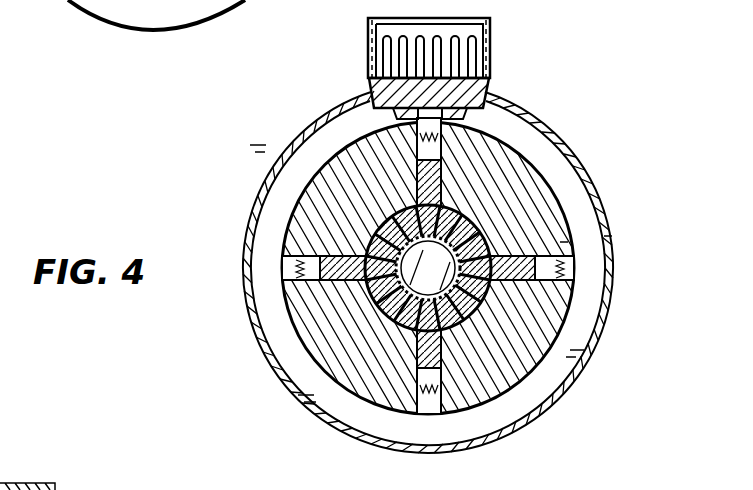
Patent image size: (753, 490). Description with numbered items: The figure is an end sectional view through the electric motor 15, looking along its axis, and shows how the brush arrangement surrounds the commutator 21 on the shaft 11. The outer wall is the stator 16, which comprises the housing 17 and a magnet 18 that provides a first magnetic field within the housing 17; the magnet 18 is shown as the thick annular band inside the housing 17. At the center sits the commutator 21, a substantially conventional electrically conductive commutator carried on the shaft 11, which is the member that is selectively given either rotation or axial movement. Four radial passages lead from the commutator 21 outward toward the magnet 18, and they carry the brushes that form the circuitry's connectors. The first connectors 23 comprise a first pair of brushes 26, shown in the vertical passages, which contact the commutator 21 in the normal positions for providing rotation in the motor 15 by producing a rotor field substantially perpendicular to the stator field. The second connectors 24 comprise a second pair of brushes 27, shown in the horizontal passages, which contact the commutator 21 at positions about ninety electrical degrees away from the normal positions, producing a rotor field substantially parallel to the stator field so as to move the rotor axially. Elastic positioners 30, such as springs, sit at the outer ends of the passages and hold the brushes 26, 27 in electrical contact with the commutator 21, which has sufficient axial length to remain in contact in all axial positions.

The shaft 11 is at (428, 268).
The electric motor 15 is at (576, 121).
The stator 16 is at (585, 163).
The housing 17 is at (596, 208).
The magnet 18 is at (594, 263).
The commutator 21 is at (484, 221).
The first connectors 23 is at (450, 172).
The second connectors 24 is at (347, 251).
The first pair of brushes 26 is at (416, 170).
The second pair of brushes 27 is at (340, 284).
The elastic positioners 30 is at (407, 160).